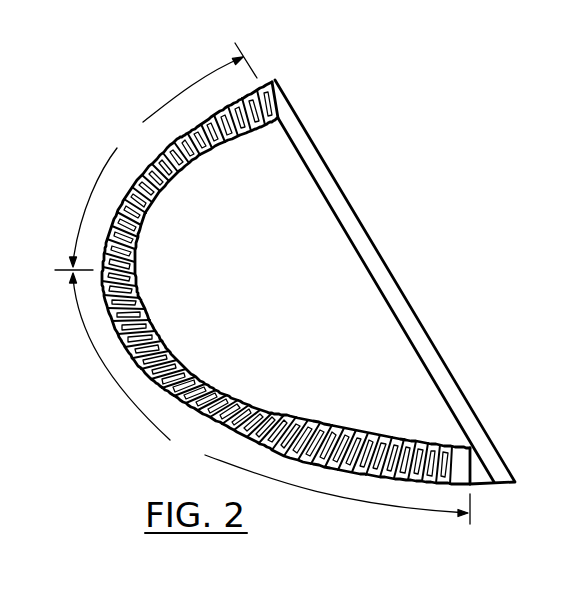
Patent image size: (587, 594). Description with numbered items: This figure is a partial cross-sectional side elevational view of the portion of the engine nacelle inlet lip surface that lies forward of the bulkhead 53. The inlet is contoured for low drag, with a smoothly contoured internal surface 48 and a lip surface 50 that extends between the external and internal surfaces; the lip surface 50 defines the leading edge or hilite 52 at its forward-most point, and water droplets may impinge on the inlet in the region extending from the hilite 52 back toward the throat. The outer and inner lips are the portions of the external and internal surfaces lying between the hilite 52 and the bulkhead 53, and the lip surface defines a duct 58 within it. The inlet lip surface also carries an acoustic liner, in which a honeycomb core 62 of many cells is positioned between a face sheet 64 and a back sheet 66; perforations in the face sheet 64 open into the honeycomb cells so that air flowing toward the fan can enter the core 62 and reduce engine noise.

The internal surface 48 is at (164, 155).
The lip surface 50 is at (269, 395).
The hilite 52 is at (93, 259).
The bulkhead 53 is at (407, 332).
The duct 58 is at (262, 207).
The honeycomb core 62 is at (427, 460).
The face sheet 64 is at (340, 468).
The back sheet 66 is at (370, 435).